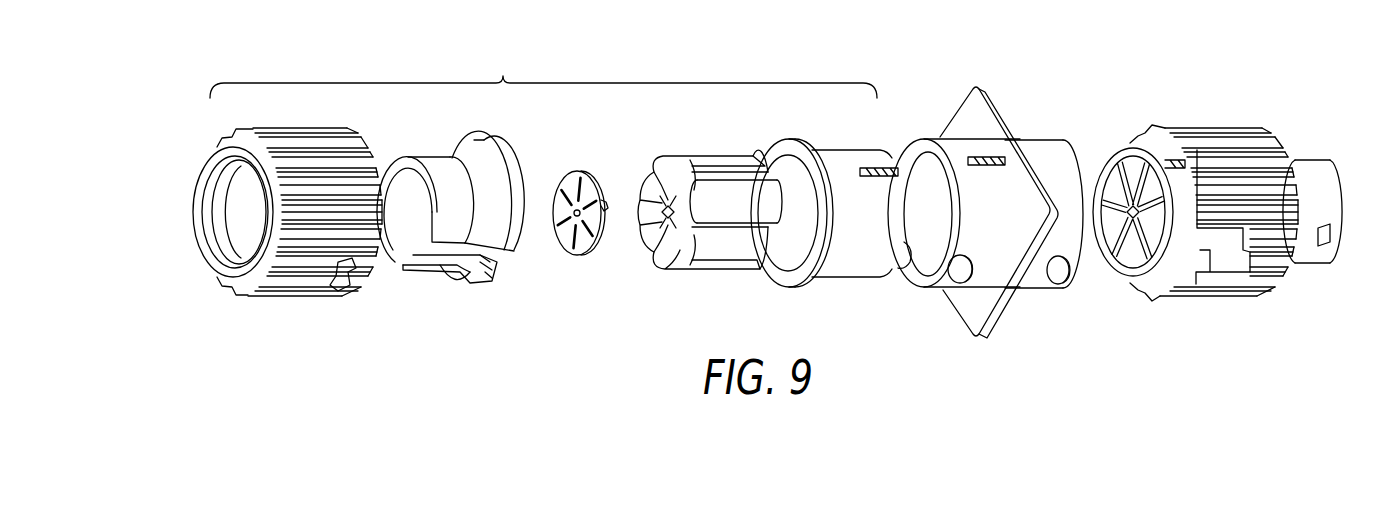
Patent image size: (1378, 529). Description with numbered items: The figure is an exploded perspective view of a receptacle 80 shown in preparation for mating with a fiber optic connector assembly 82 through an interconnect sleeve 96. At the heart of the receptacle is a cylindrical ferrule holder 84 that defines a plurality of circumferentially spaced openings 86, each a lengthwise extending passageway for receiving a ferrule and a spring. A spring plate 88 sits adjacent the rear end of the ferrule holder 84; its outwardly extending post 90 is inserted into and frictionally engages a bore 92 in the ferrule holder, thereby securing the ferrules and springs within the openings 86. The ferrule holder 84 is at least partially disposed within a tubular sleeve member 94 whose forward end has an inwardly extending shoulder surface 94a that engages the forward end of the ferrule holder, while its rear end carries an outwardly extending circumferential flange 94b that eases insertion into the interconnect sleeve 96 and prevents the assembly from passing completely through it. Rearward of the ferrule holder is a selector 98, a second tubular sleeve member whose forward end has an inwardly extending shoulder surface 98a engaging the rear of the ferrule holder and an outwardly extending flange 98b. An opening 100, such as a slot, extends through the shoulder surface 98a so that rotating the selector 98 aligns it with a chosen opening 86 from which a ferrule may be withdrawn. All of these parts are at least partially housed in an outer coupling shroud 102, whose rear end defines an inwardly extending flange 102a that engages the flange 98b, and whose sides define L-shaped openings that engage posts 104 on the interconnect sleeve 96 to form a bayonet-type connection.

The receptacle 80 is at (543, 74).
The fiber optic connector assembly 82 is at (1293, 106).
The ferrule holder 84 is at (698, 227).
The openings 86 is at (650, 195).
The spring plate 88 is at (581, 228).
The post 90 is at (606, 210).
The bore 92 is at (665, 214).
The tubular sleeve member 94 is at (919, 221).
The shoulder surface 94a is at (912, 270).
The circumferential flange 94b is at (775, 147).
The interconnect sleeve 96 is at (1043, 124).
The selector 98 is at (448, 234).
The shoulder surface 98a is at (467, 283).
The flange 98b is at (472, 143).
The opening 100 is at (402, 253).
The outer coupling shroud 102 is at (255, 217).
The flange 102a is at (213, 206).
The posts 104 is at (961, 277).